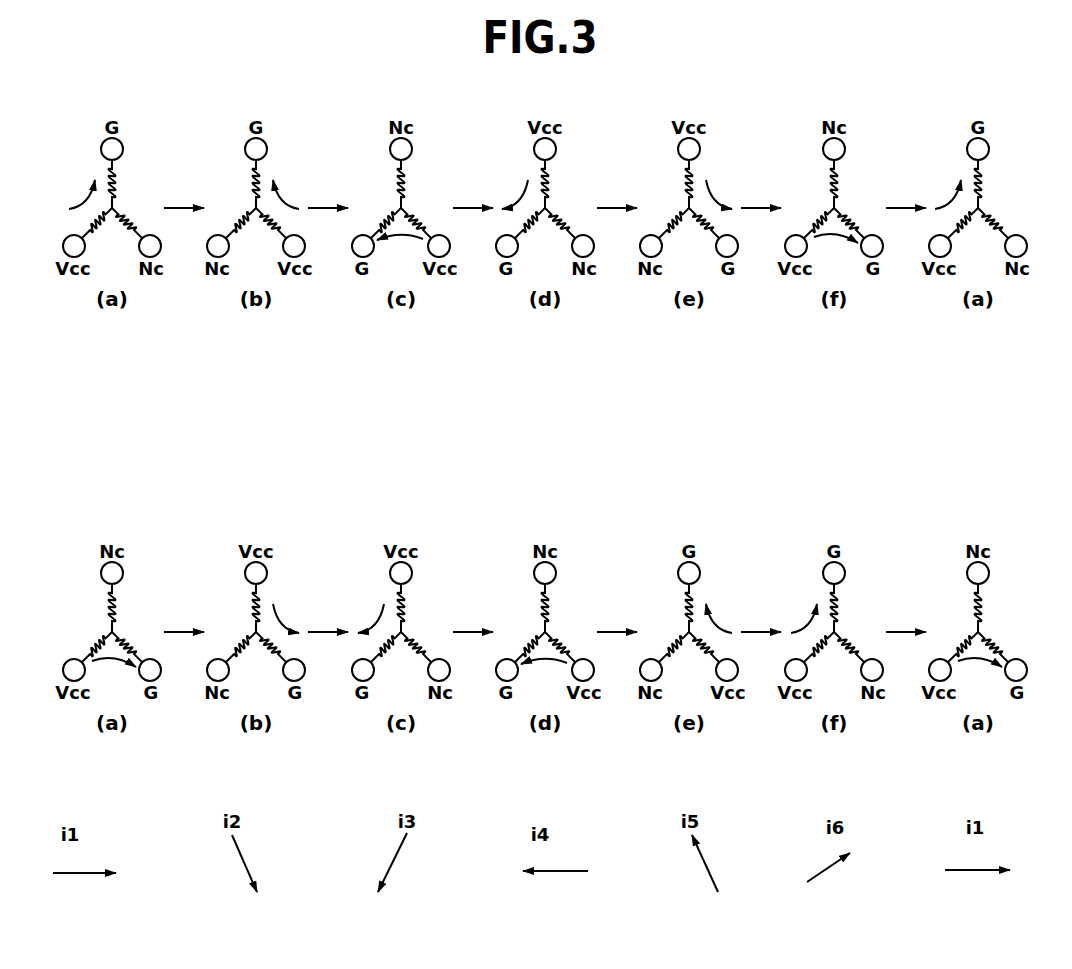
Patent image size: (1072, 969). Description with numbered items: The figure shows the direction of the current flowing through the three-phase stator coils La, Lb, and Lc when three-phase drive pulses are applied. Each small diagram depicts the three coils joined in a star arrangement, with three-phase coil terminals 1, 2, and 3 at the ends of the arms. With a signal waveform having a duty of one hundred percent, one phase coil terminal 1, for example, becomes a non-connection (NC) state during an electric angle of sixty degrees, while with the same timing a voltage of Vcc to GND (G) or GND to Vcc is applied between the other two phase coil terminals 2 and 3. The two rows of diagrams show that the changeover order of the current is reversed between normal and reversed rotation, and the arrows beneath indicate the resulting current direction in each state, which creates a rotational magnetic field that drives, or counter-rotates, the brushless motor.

The one phase coil terminal 1 is at (583, 458).
The coil terminal 2 is at (545, 361).
The coil terminal 3 is at (507, 458).